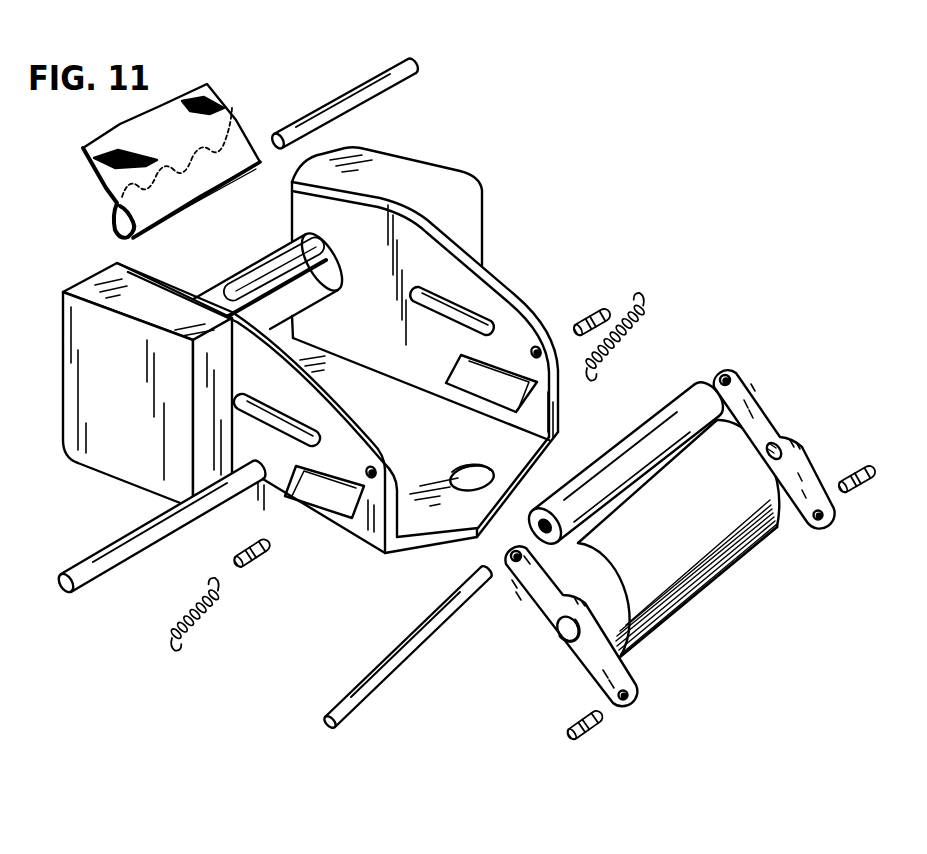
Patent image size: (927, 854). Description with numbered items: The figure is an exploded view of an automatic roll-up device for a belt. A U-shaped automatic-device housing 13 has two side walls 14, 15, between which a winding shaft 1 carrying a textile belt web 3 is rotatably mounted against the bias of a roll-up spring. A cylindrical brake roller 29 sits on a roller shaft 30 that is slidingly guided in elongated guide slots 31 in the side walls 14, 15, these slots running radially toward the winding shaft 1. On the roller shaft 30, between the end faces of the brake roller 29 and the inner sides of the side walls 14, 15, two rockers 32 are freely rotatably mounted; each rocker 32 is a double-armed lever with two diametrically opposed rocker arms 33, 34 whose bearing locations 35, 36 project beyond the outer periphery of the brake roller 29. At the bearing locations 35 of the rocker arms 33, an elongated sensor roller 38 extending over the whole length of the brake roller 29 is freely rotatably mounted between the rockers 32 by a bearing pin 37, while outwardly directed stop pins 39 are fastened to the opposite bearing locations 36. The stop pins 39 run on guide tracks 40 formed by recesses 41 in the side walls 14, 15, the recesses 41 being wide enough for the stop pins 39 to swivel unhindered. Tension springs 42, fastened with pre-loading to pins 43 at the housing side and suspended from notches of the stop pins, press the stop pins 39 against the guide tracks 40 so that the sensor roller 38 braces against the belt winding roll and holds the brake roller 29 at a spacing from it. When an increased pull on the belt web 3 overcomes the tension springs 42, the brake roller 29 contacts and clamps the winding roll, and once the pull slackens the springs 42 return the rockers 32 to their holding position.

The winding shaft 1 is at (229, 280).
The belt web 3 is at (232, 121).
The automatic-device housing 13 is at (339, 388).
The side wall 14 is at (361, 460).
The side wall 15 is at (510, 313).
The brake roller 29 is at (700, 580).
The roller shaft 30 is at (100, 562).
The guide slot 31 is at (470, 308).
The rocker 32 is at (664, 530).
The rocker arm 33 is at (525, 588).
The rocker arm 34 is at (605, 686).
The bearing location 35 is at (509, 556).
The bearing location 36 is at (641, 704).
The bearing pin 37 is at (357, 698).
The sensor roller 38 is at (653, 425).
The stop pin 39 is at (878, 477).
The guide track 40 is at (493, 362).
The recess 41 is at (497, 362).
The tension spring 42 is at (646, 318).
The pin 43 is at (597, 311).